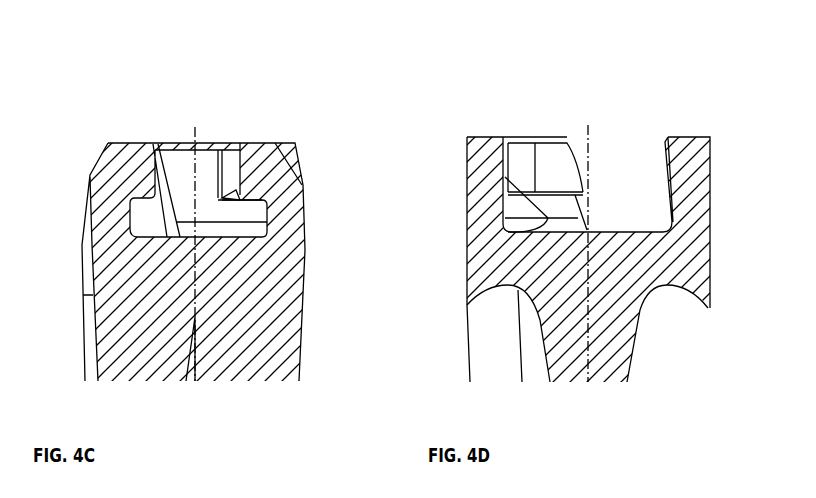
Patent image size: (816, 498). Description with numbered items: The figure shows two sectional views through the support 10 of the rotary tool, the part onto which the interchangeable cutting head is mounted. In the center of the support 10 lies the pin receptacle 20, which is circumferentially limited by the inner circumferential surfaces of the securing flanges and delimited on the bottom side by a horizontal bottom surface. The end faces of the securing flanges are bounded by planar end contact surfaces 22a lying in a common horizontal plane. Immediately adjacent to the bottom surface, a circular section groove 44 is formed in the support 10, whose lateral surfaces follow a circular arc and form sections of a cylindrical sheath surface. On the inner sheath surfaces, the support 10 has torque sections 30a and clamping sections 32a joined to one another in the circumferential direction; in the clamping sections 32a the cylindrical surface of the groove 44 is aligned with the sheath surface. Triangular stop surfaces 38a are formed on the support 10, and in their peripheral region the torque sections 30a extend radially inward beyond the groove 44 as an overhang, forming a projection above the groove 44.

In FIG. 4C, the support 10 is at (319, 72).
In FIG. 4D, the support 10 is at (704, 69).
In FIG. 4C, the pin receptacle 20 is at (208, 165).
In FIG. 4D, the pin receptacle 20 is at (615, 162).
In FIG. 4C, the end contact surface 22a is at (128, 140).
In FIG. 4D, the end contact surface 22a is at (688, 137).
In FIG. 4D, the torque section 30a is at (558, 163).
In FIG. 4D, the clamping section 32a is at (510, 228).
In FIG. 4C, the stop surface 38a is at (250, 202).
In FIG. 4C, the groove 44 is at (264, 228).